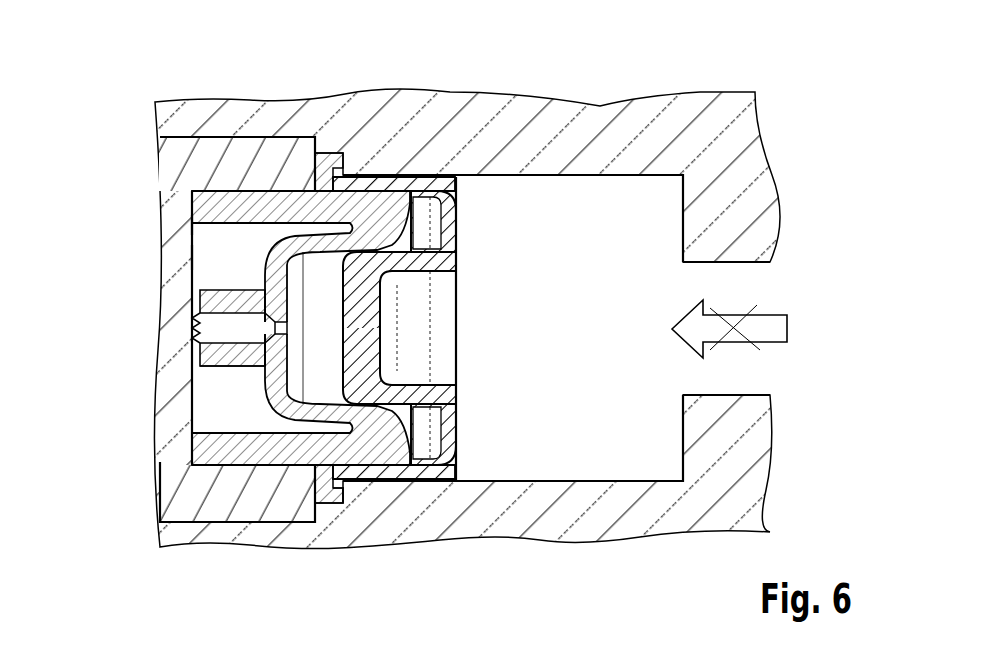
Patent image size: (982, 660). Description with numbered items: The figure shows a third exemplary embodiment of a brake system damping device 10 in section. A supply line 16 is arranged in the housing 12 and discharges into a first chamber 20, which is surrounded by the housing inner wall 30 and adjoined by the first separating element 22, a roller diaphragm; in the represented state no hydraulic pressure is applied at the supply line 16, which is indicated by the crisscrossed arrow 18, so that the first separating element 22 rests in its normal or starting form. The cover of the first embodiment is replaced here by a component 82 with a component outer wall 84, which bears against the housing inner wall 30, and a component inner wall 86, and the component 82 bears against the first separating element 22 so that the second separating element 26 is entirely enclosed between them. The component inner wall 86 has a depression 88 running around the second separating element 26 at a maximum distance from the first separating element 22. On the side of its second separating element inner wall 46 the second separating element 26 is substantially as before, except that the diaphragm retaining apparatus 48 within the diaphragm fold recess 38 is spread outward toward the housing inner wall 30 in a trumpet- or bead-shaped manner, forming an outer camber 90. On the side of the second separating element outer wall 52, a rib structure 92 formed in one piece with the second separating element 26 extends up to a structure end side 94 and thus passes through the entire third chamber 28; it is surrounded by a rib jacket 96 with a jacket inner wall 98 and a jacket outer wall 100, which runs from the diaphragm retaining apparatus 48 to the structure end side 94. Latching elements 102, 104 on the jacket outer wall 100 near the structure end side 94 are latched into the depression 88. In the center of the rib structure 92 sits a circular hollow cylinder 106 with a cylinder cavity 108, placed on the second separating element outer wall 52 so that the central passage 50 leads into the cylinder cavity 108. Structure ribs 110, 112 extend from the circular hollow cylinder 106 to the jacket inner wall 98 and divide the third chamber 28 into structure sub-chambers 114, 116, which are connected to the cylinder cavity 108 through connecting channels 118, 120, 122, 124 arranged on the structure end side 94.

The brake system damping device 10 is at (791, 91).
The housing 12 is at (732, 143).
The supply line 16 is at (760, 282).
The crisscrossed arrow 18 is at (767, 332).
The first chamber 20 is at (748, 460).
The first separating element 22 is at (381, 186).
The second separating element 26 is at (286, 188).
The third chamber 28 is at (327, 470).
The housing inner wall 30 is at (640, 178).
The diaphragm fold recess 38 is at (457, 226).
The second separating element inner wall 46 is at (398, 370).
The diaphragm retaining apparatus 48 is at (446, 256).
The passage 50 is at (372, 330).
The second separating element outer wall 52 is at (343, 503).
The component 82 is at (283, 147).
The component outer wall 84 is at (225, 125).
The component inner wall 86 is at (217, 208).
The depression 88 is at (183, 203).
The outer camber 90 is at (445, 190).
The rib structure 92 is at (176, 257).
The structure end side 94 is at (152, 228).
The rib jacket 96 is at (287, 470).
The jacket inner wall 98 is at (428, 284).
The jacket outer wall 100 is at (257, 482).
The latching element 102 is at (188, 193).
The latching element 104 is at (198, 470).
The circular hollow cylinder 106 is at (222, 378).
The cylinder cavity 108 is at (397, 305).
The structure rib 110 is at (203, 281).
The structure rib 112 is at (198, 440).
The structure sub-chamber 114 is at (205, 248).
The structure sub-chamber 116 is at (205, 413).
The connecting channel 118 is at (220, 297).
The connecting channel 120 is at (197, 318).
The connecting channel 122 is at (220, 352).
The connecting channel 124 is at (273, 334).